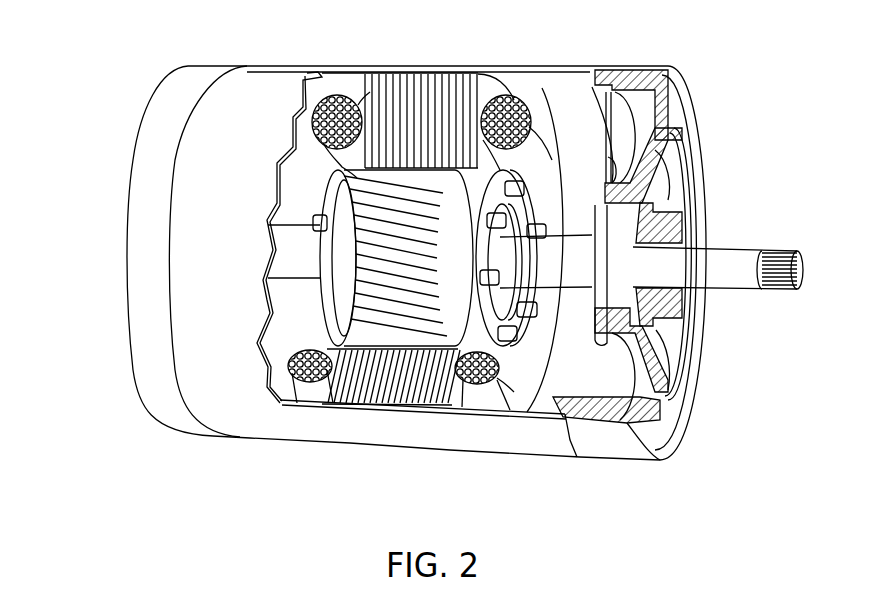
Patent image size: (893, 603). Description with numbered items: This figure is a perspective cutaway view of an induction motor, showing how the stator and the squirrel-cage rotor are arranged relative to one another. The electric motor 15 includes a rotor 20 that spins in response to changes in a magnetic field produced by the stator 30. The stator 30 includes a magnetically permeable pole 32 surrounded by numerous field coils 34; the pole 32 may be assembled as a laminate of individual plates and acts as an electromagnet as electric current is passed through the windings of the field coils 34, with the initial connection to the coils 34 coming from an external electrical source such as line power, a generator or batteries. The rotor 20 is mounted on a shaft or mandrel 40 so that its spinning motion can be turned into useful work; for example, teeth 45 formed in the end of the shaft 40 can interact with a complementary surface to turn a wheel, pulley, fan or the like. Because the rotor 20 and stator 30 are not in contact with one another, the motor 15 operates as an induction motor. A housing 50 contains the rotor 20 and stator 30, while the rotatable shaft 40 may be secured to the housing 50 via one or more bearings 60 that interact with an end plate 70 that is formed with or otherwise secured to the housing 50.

The electric motor 15 is at (124, 95).
The rotor 20 is at (347, 247).
The stator 30 is at (432, 82).
The magnetically permeable pole 32 is at (393, 395).
The field coils 34 is at (529, 120).
The shaft 40 is at (742, 290).
The teeth 45 is at (783, 252).
The housing 50 is at (528, 432).
The bearings 60 is at (603, 212).
The end plate 70 is at (678, 113).